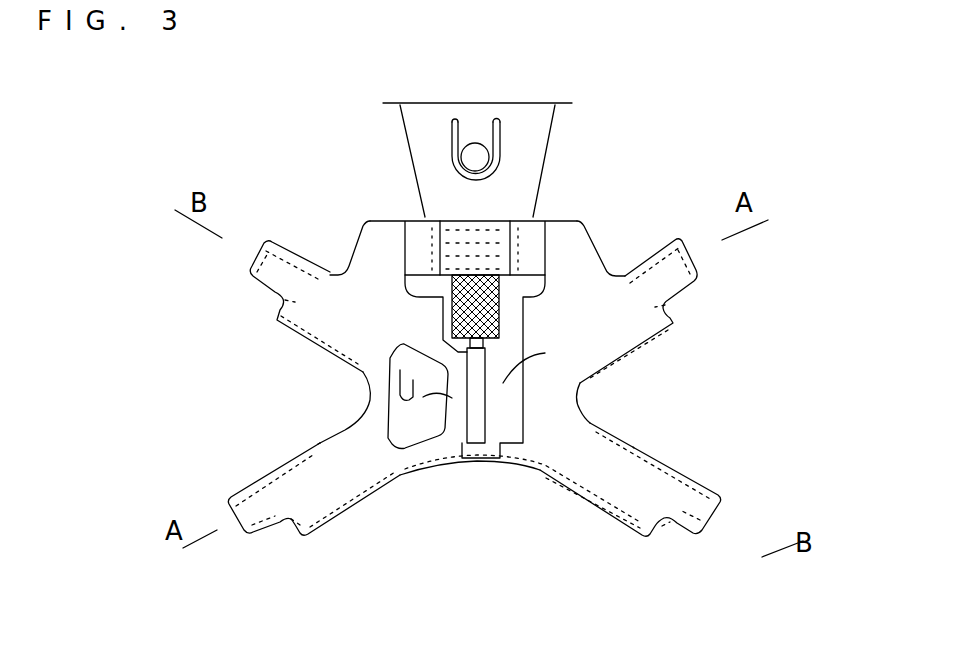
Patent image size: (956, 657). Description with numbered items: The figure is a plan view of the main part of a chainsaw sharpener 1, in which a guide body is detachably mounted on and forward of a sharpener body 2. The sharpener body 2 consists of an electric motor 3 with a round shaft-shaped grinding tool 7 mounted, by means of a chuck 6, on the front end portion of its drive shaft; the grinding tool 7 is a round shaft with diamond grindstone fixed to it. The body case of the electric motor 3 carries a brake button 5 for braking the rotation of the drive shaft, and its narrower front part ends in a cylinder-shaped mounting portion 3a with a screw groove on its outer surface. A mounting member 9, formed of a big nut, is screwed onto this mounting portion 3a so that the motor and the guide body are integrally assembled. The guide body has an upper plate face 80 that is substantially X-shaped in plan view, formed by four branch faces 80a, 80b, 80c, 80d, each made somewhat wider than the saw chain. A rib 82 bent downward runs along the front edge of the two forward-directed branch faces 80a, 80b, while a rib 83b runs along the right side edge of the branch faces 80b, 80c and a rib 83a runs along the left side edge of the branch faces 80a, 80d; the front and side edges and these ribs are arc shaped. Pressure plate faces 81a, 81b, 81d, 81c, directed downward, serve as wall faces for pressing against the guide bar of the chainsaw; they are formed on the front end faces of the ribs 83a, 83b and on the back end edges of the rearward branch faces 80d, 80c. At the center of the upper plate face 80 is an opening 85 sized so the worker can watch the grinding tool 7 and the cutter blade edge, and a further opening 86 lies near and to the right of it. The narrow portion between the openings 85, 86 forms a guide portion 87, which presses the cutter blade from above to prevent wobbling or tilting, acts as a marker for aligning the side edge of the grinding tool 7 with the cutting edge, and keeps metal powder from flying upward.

The chainsaw sharpener 1 is at (732, 110).
The sharpener body 2 is at (631, 75).
The electric motor 3 is at (528, 120).
The mounting portion 3a is at (548, 212).
The brake button 5 is at (475, 155).
The chuck 6 is at (499, 305).
The grinding tool 7 is at (485, 423).
The mounting member 9 is at (418, 247).
The upper plate face 80 is at (432, 455).
The branch face 80a is at (318, 490).
The branch face 80b is at (650, 507).
The branch face 80c is at (624, 303).
The branch face 80d is at (310, 308).
The pressure plate face 81a is at (270, 517).
The pressure plate face 81b is at (665, 468).
The pressure plate face 81c is at (697, 283).
The pressure plate face 81d is at (268, 293).
The rib 82 is at (515, 465).
The rib 83a is at (320, 445).
The rib 83b is at (633, 447).
The opening 85 is at (545, 353).
The opening 86 is at (413, 397).
The guide portion 87 is at (423, 397).